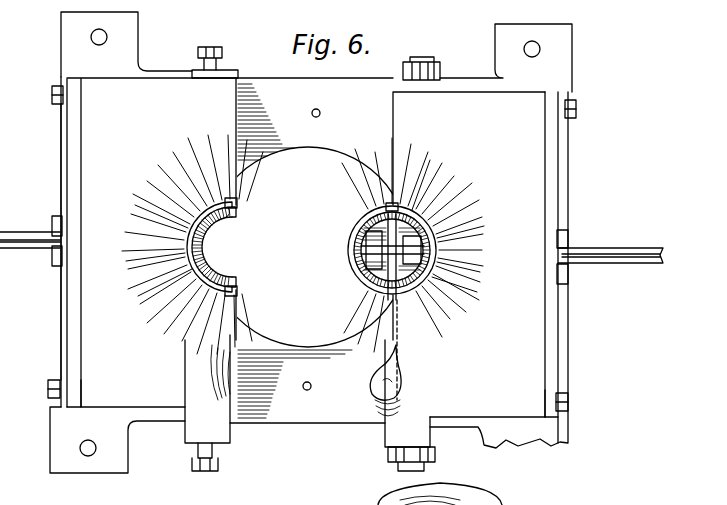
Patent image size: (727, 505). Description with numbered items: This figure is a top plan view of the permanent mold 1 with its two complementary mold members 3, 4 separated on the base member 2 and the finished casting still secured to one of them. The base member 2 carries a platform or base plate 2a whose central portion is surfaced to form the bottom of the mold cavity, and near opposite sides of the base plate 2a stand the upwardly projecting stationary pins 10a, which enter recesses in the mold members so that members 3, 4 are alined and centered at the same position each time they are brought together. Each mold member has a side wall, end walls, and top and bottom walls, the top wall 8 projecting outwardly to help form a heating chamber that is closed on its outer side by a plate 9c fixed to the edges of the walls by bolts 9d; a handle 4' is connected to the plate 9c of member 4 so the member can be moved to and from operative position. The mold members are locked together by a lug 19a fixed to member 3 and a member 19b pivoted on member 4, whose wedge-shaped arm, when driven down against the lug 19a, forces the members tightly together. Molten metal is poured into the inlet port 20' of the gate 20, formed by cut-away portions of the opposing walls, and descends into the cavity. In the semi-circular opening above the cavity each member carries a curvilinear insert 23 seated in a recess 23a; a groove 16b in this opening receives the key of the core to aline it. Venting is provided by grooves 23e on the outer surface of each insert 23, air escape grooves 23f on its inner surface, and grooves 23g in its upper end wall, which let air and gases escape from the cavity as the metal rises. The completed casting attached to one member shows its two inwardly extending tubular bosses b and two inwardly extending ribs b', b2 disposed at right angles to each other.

The permanent mold 1 is at (47, 242).
The base member 2 is at (560, 70).
The base plate 2a is at (308, 253).
The complementary mold member 3 is at (230, 242).
The complementary mold member 4 is at (475, 254).
The handle 4' is at (331, 250).
The top wall 8 is at (313, 374).
The plate 9c is at (70, 314).
The bolt 9d is at (52, 96).
The stationary pin 10a is at (320, 111).
The groove 16b is at (234, 204).
The lug 19a is at (205, 58).
The pivoted latching member 19b is at (448, 62).
The gate 20 is at (405, 373).
The inlet port 20' is at (200, 389).
The insert 23 is at (200, 197).
The recess 23a is at (196, 238).
The recess or groove 23e is at (201, 259).
The air escape groove 23f is at (224, 218).
The groove 23g is at (185, 300).
The tubular boss b is at (408, 250).
The rib b' is at (378, 261).
The rib b2 is at (372, 224).